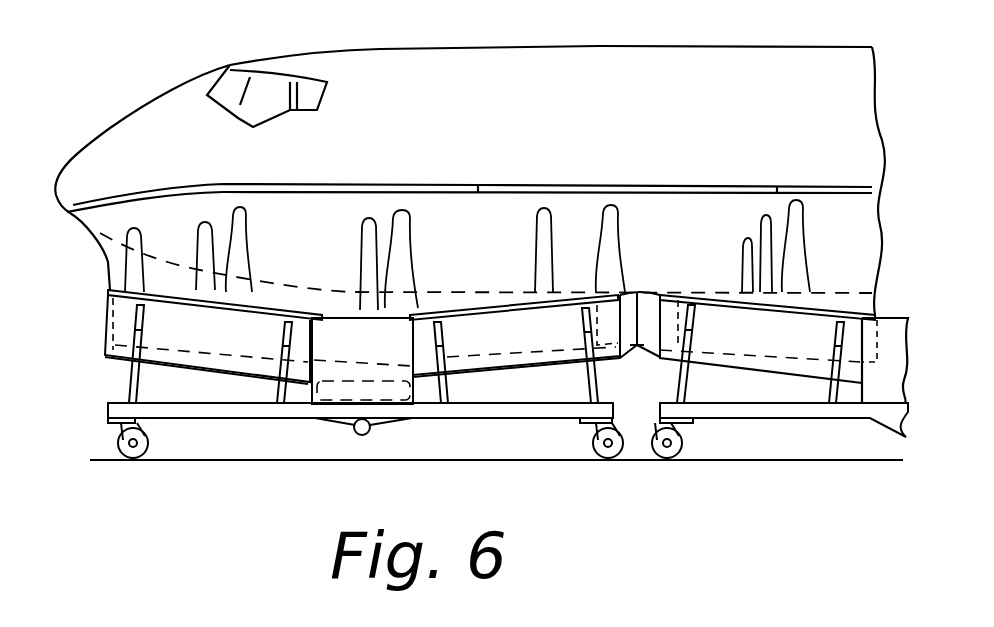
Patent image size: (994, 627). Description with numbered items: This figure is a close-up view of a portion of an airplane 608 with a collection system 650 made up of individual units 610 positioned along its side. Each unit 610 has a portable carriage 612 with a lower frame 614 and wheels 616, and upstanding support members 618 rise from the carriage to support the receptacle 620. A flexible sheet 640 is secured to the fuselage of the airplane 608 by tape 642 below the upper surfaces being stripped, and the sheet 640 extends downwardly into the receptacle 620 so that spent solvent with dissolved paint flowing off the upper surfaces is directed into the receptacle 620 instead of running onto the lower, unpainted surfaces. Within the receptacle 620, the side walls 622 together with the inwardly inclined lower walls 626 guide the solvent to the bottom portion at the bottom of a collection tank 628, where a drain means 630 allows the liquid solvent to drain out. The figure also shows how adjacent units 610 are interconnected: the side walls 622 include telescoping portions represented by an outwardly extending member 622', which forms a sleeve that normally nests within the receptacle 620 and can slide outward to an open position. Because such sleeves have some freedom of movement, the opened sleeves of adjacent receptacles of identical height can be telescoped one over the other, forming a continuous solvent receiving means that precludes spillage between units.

The airplane 608 is at (460, 95).
The tape 642 is at (357, 185).
The flexible sheet 640 is at (467, 255).
The receptacle 620 is at (104, 293).
The side walls 622 is at (339, 338).
The outwardly extending member 622' is at (716, 319).
The collection tank 628 is at (378, 353).
The upstanding support members 618 is at (131, 375).
The inwardly inclined lower walls 626 is at (215, 372).
The lower frame 614 is at (541, 404).
The portable carriages 612 is at (275, 422).
The wheels 616 is at (148, 460).
The drain means 630 is at (355, 431).
The system 650 is at (641, 466).
The individual unit 610 is at (103, 396).